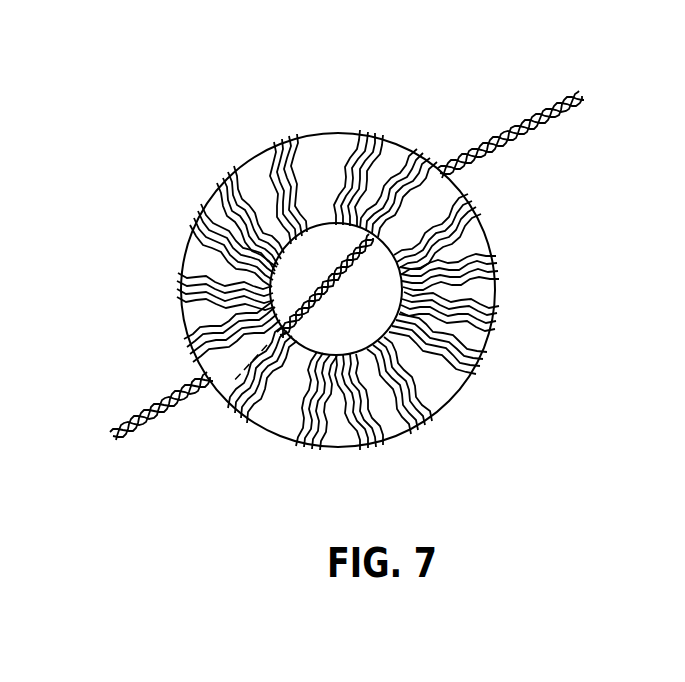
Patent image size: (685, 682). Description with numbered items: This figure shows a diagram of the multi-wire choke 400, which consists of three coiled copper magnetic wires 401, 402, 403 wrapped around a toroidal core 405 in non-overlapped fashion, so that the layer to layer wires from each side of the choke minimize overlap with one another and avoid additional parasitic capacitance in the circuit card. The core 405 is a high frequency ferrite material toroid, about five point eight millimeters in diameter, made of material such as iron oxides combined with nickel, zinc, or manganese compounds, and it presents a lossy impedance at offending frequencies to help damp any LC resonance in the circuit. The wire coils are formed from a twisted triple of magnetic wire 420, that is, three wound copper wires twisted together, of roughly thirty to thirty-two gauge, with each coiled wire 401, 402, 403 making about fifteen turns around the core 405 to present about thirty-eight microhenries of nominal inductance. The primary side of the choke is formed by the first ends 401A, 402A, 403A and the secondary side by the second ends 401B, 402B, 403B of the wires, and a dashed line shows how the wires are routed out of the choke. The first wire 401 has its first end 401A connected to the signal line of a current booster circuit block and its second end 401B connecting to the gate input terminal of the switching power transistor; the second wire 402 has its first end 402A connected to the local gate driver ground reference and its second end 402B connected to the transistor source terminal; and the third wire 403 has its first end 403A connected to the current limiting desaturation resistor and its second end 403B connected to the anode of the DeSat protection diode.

The multi-wire choke 400 is at (210, 164).
The first wire 401 is at (360, 134).
The second wire 402 is at (377, 137).
The third wire 403 is at (380, 138).
The first end of first wire 401A is at (117, 432).
The first end of second wire 402A is at (122, 443).
The first end of third wire 403A is at (132, 440).
The second end of first wire 401B is at (575, 95).
The second end of second wire 402B is at (578, 97).
The second end of third wire 403B is at (568, 112).
The toroidal core 405 is at (440, 382).
The twisted triple of magnetic wire 420 is at (536, 159).